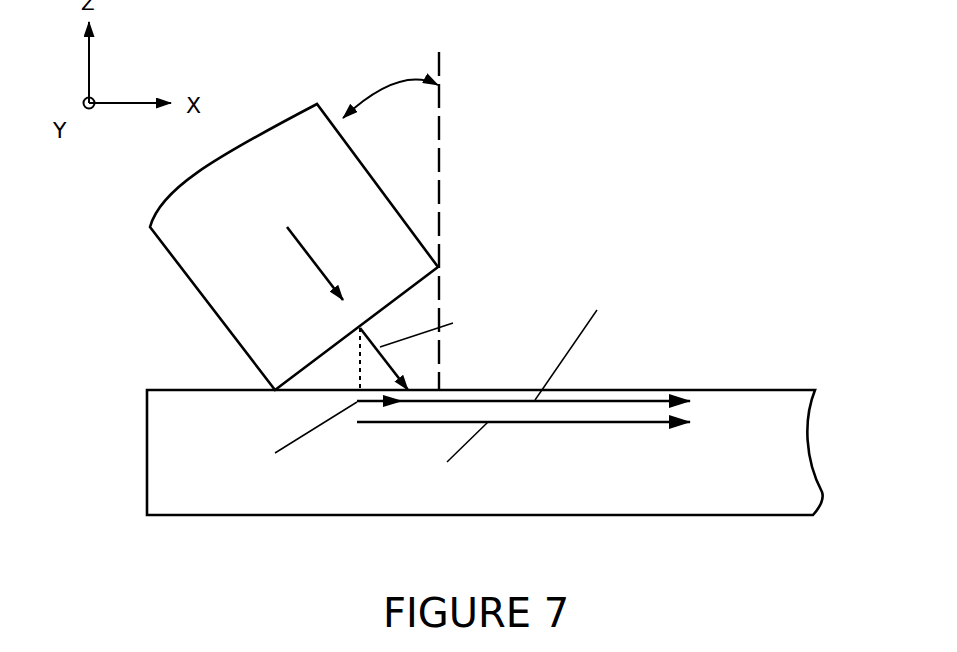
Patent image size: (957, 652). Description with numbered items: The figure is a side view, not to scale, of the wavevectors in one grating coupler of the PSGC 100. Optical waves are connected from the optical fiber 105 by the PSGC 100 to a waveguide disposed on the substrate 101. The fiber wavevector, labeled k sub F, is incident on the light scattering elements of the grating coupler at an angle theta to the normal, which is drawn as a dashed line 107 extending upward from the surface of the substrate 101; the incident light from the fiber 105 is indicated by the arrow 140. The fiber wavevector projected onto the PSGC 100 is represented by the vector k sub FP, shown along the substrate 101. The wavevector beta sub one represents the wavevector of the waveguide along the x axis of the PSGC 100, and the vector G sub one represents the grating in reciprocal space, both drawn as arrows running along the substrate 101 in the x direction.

The PSGC 100 is at (485, 282).
The substrate 101 is at (703, 485).
The optical fiber 105 is at (334, 171).
The surface normal 107 is at (442, 127).
The incident light beam 140 is at (303, 253).